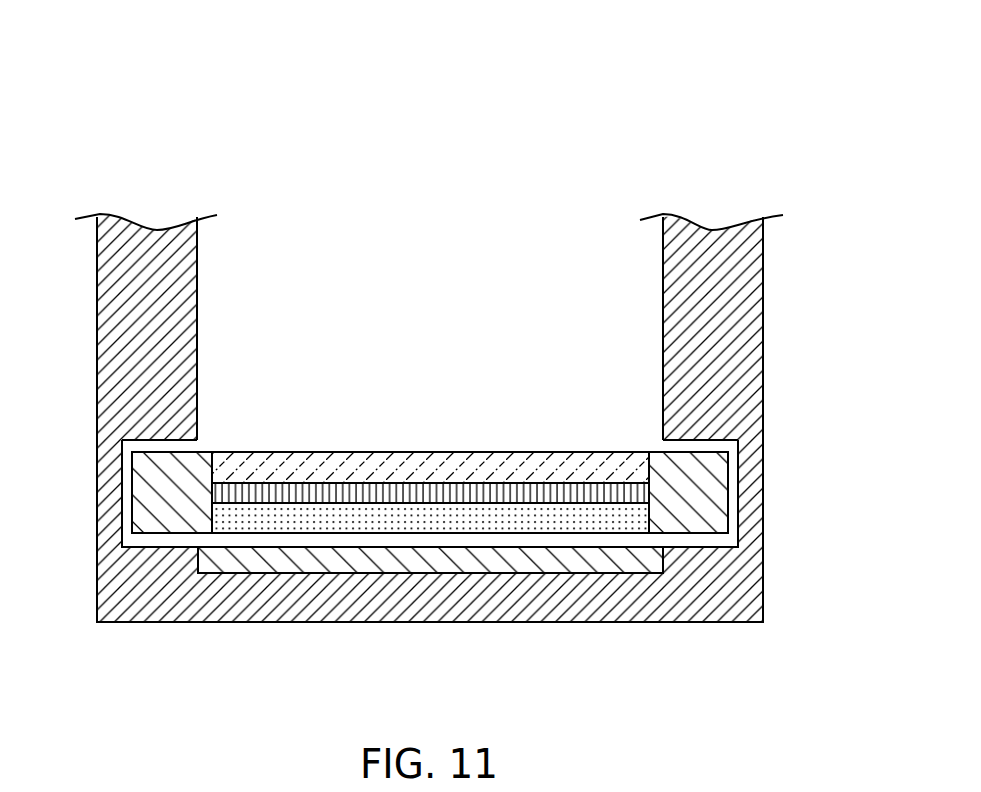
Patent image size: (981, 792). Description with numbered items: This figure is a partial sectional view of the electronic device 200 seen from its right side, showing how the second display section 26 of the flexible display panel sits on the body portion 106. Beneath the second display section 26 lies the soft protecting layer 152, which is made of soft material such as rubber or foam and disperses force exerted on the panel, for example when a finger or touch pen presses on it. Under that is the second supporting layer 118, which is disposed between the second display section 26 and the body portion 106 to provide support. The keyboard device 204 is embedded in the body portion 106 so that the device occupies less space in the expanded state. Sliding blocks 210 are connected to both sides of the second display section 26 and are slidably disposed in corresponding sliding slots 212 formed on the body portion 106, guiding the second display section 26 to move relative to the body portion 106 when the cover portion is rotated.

The electronic device 200 is at (704, 112).
The body portion 106 is at (745, 348).
The sliding slot 212 is at (128, 433).
The sliding block 210 is at (143, 505).
The second display section 26 is at (533, 465).
The soft protecting layer 152 is at (467, 495).
The second supporting layer 118 is at (405, 523).
The keyboard device 204 is at (600, 560).